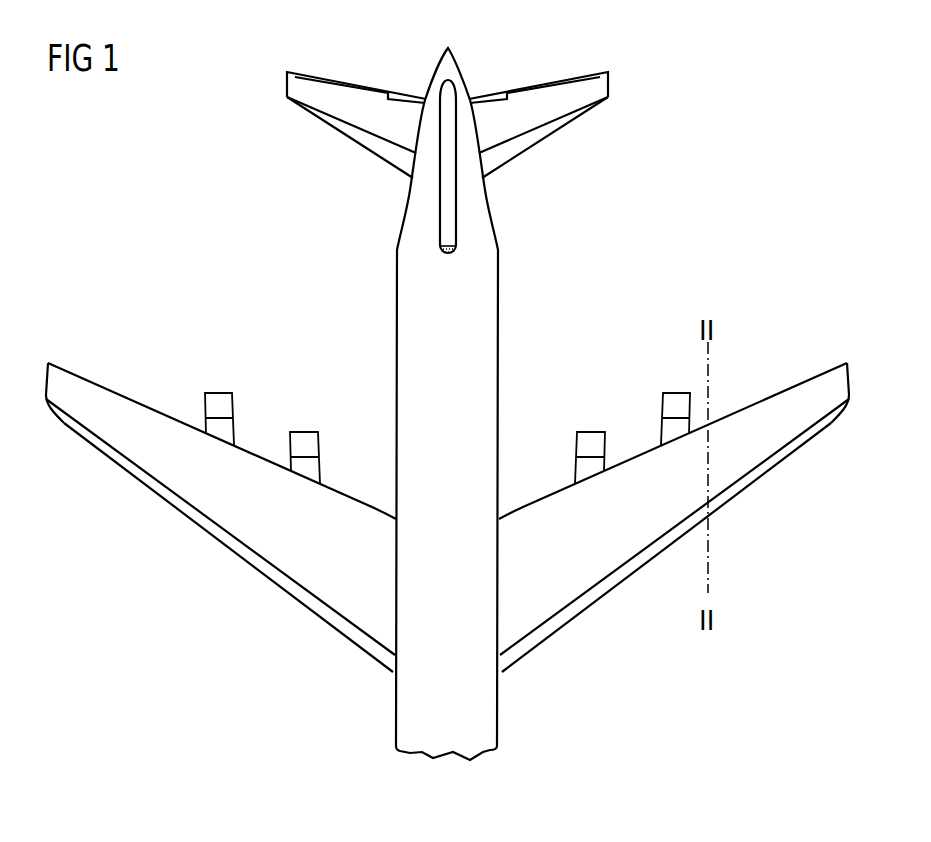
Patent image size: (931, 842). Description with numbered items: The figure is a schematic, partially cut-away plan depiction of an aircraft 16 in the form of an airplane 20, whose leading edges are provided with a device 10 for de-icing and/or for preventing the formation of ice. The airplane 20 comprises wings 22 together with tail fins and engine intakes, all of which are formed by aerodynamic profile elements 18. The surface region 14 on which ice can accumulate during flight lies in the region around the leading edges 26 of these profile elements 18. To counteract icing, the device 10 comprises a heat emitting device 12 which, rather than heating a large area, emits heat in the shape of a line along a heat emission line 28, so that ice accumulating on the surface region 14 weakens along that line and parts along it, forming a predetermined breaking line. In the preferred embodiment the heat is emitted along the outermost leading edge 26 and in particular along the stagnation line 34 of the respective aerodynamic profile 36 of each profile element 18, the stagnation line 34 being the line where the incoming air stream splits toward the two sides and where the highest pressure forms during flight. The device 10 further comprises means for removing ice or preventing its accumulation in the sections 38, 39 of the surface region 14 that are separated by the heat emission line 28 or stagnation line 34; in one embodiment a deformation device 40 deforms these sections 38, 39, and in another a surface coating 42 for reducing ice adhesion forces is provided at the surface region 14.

The device for de-icing and/or for preventing the formation of ice 10 is at (343, 157).
The heat emitting device 12 is at (298, 109).
The surface region 14 is at (386, 158).
The aircraft 16 is at (708, 249).
The profile element 18 is at (371, 106).
The airplane 20 is at (485, 388).
The wing 22 is at (104, 394).
The leading edge 26 is at (580, 621).
The heat emission line 28 is at (719, 512).
The stagnation line 34 is at (326, 626).
The aerodynamic profile 36 is at (320, 96).
The section of the surface region 38 is at (274, 549).
The section of the surface region 39 is at (352, 676).
The deformation device 40 is at (172, 505).
The surface coating 42 is at (139, 478).